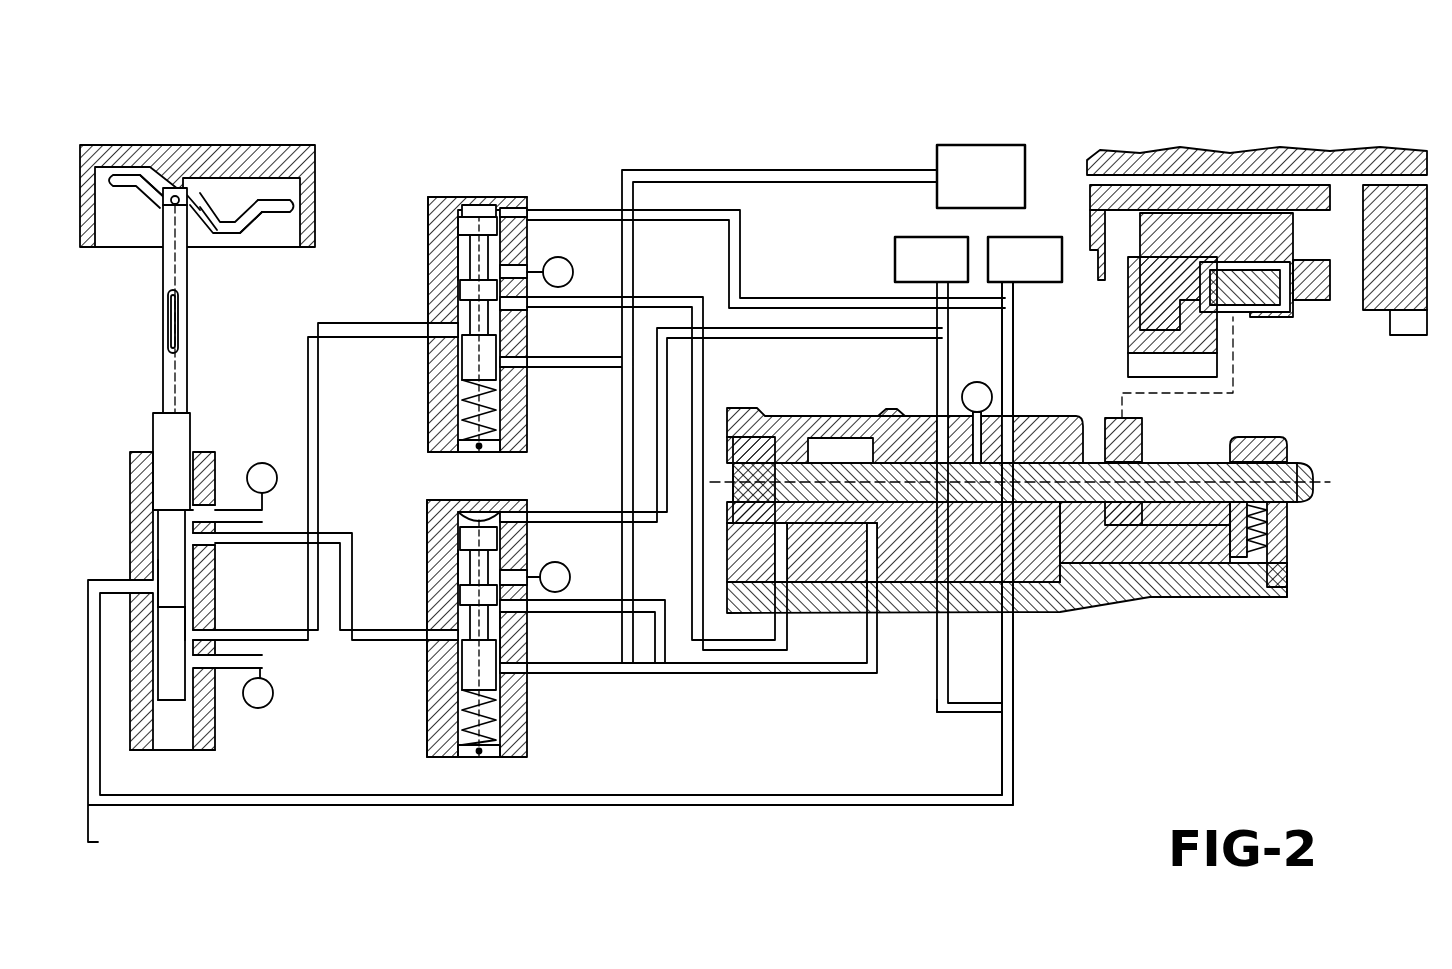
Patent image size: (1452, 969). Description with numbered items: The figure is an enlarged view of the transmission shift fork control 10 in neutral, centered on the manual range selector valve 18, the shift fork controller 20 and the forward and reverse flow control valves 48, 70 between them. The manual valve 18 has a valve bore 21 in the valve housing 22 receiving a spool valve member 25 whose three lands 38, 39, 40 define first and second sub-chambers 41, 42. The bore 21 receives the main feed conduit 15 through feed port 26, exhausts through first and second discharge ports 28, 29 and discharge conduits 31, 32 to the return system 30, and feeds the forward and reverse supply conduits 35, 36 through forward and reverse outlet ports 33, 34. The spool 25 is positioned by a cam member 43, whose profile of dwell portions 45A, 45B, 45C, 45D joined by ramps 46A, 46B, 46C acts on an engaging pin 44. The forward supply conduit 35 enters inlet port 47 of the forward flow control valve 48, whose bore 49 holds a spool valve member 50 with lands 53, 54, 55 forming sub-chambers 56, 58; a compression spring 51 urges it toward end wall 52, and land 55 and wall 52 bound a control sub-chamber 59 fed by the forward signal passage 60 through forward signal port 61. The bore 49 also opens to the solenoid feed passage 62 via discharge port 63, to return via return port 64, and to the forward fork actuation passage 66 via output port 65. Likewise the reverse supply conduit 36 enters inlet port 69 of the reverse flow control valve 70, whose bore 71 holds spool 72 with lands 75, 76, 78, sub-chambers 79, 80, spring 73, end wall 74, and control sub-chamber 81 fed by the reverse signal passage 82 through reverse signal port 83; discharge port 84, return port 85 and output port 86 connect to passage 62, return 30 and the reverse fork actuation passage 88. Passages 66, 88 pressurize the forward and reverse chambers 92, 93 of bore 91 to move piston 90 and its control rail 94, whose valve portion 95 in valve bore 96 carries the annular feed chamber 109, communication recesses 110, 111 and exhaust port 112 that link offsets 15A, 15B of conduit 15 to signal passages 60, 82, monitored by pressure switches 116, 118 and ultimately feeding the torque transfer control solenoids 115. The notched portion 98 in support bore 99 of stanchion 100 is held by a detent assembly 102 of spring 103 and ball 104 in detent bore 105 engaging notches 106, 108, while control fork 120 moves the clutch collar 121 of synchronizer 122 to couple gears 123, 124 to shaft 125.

The transmission shift fork control 10 is at (592, 122).
The main feed conduit 15 is at (95, 812).
The first offset of main feed conduit 15A is at (1013, 738).
The further offset branch of main feed conduit 15B is at (948, 712).
The manual range selector valve 18 is at (128, 470).
The shift fork controller 20 is at (1135, 612).
The valve bore 21 is at (186, 740).
The valve housing 22 is at (200, 745).
The spool valve member 25 is at (190, 418).
The feed port 26 is at (130, 588).
The first discharge port 28 is at (205, 515).
The second discharge port 29 is at (205, 665).
The fluid return system 30 is at (268, 478).
The first discharge conduit 31 is at (268, 513).
The second discharge conduit 32 is at (266, 660).
The forward outlet port 33 is at (205, 635).
The reverse outlet port 34 is at (212, 540).
The forward supply conduit 35 is at (310, 352).
The reverse supply conduit 36 is at (293, 543).
The land 38 is at (162, 425).
The land 39 is at (152, 548).
The land 40 is at (160, 728).
The first sub-chamber 41 is at (205, 610).
The second sub-chamber 42 is at (152, 512).
The cam member 43 is at (110, 250).
The engaging pin 44 is at (168, 202).
The dwell portion 45A is at (150, 180).
The dwell portion 45B is at (190, 192).
The dwell portion 45C is at (226, 238).
The dwell portion 45D is at (285, 205).
The ramp 46A is at (167, 190).
The ramp 46B is at (215, 222).
The ramp 46C is at (268, 222).
The inlet port 47 is at (448, 330).
The forward flow control valve 48 is at (428, 402).
The valve bore 49 is at (460, 440).
The spool valve member 50 is at (476, 255).
The compression spring 51 is at (500, 420).
The end wall 52 is at (480, 212).
The land 53 is at (472, 362).
The land 54 is at (470, 298).
The land 55 is at (460, 215).
The first sub-chamber 56 is at (482, 320).
The second sub-chamber 58 is at (463, 278).
The control sub-chamber 59 is at (448, 210).
The forward signal passage 60 is at (738, 262).
The forward signal port 61 is at (520, 212).
The solenoid feed passage 62 is at (772, 182).
The discharge port 63 is at (515, 370).
The return port 64 is at (515, 268).
The output port 65 is at (515, 310).
The forward fork actuation passage 66 is at (692, 580).
The inlet port 69 is at (442, 640).
The reverse flow control valve 70 is at (427, 705).
The valve bore 71 is at (465, 745).
The spool valve member 72 is at (470, 592).
The compression spring 73 is at (510, 725).
The end wall 74 is at (483, 515).
The land 75 is at (472, 668).
The land 76 is at (470, 605).
The land 78 is at (465, 545).
The first sub-chamber 79 is at (503, 648).
The second sub-chamber 80 is at (465, 568).
The control sub-chamber 81 is at (465, 520).
The reverse signal passage 82 is at (727, 340).
The reverse signal port 83 is at (515, 520).
The discharge port 84 is at (515, 675).
The return port 85 is at (515, 567).
The output port 86 is at (515, 610).
The reverse fork actuation passage 88 is at (826, 672).
The piston 90 is at (795, 440).
The bore 91 is at (835, 528).
The forward chamber 92 is at (770, 440).
The reverse chamber 93 is at (835, 445).
The control rail 94 is at (1160, 555).
The valve portion 95 is at (1050, 570).
The valve bore 96 is at (1100, 570).
The notched portion 98 is at (1315, 480).
The support bore 99 is at (1280, 462).
The support stanchion 100 is at (1278, 445).
The detent assembly 102 is at (1282, 555).
The spring 103 is at (1275, 540).
The ball 104 is at (1270, 518).
The detent bore 105 is at (1268, 580).
The forward notch 106 is at (1225, 562).
The reverse notch 108 is at (1300, 495).
The annular feed chamber 109 is at (943, 500).
The communication recess 110 is at (892, 410).
The communication recess 111 is at (1022, 462).
The exhaust port 112 is at (885, 455).
The torque transfer control solenoids 115 is at (981, 176).
The pressure-sensing switch 116 is at (1025, 521).
The pressure-sensing switch 118 is at (948, 474).
The control fork 120 is at (1135, 437).
The clutch collar 121 is at (1262, 320).
The synchronizer 122 is at (1267, 148).
The gear 123 is at (1405, 292).
The gear 124 is at (1128, 335).
The shaft 125 is at (1092, 210).